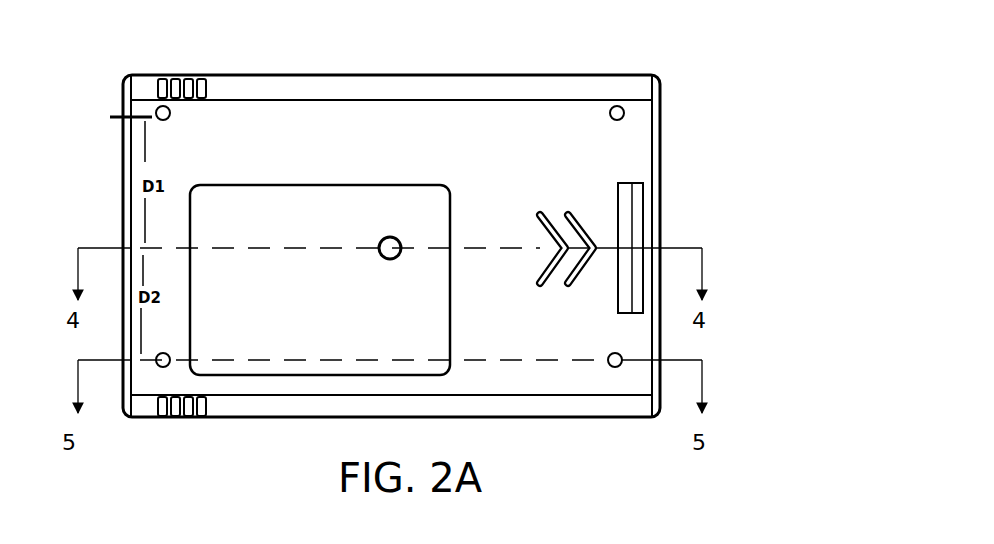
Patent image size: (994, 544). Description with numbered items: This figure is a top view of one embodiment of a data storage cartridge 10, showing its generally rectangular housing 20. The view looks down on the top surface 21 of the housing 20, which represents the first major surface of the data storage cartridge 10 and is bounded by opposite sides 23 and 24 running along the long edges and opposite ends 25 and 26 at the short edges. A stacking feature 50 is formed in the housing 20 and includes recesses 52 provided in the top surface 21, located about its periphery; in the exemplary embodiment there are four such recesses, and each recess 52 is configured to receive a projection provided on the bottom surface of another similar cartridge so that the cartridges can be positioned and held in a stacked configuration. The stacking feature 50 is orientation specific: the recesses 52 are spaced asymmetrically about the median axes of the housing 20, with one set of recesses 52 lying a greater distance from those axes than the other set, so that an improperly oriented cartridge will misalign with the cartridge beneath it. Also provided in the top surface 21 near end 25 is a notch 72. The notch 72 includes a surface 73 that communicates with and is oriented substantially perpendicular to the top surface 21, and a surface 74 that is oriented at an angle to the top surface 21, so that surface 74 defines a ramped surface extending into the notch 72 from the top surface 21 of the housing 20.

The data storage cartridge 10 is at (702, 40).
The housing 20 is at (335, 244).
The top surface 21 is at (395, 157).
The side 23 is at (516, 73).
The side 24 is at (500, 420).
The end 25 is at (662, 195).
The end 26 is at (121, 150).
The stacking feature 50 is at (202, 62).
The recesses 52 is at (158, 73).
The notch 72 is at (636, 192).
The surface 73 is at (636, 284).
The surface 74 is at (622, 216).